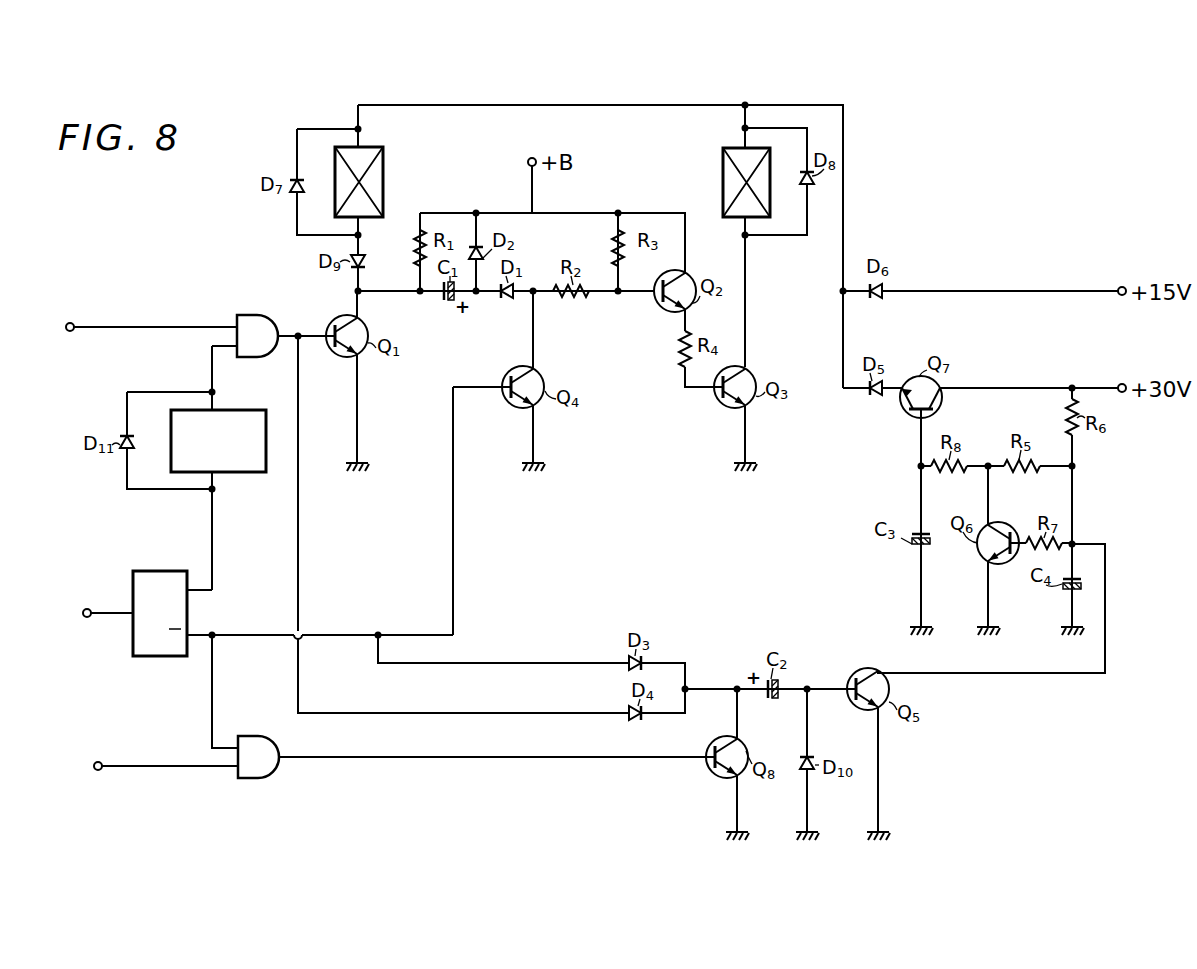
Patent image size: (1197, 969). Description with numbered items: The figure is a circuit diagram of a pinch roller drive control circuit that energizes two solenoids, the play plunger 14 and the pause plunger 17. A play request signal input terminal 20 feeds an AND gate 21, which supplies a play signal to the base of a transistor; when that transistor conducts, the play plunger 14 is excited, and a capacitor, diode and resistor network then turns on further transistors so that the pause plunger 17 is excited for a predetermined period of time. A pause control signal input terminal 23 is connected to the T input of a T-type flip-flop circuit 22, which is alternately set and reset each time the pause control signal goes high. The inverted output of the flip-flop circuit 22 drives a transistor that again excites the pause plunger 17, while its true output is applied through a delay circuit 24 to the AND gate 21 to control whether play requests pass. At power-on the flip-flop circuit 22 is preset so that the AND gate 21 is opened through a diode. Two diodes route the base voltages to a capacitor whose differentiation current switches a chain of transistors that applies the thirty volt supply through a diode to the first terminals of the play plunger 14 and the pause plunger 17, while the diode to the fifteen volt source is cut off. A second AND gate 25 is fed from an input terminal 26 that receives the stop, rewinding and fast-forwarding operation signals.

The play plunger 14 is at (383, 182).
The pause plunger 17 is at (723, 185).
The play request signal input terminal 20 is at (96, 308).
The AND gate 21 is at (256, 315).
The T-type flip-flop circuit 22 is at (165, 571).
The pause control signal input terminal 23 is at (84, 614).
The delay circuit 24 is at (230, 410).
The AND gate 25 is at (258, 736).
The input terminal 26 is at (96, 762).